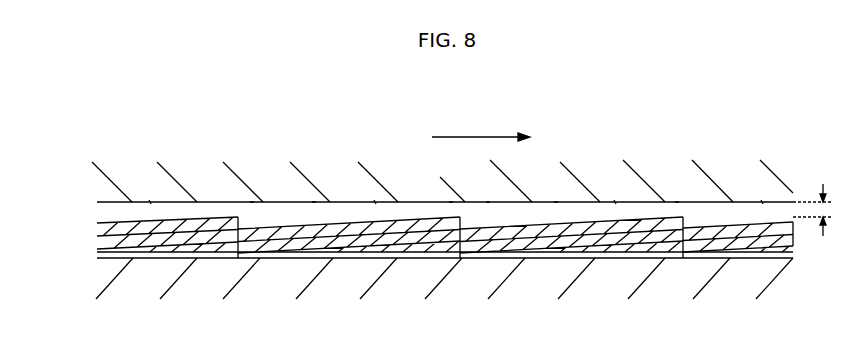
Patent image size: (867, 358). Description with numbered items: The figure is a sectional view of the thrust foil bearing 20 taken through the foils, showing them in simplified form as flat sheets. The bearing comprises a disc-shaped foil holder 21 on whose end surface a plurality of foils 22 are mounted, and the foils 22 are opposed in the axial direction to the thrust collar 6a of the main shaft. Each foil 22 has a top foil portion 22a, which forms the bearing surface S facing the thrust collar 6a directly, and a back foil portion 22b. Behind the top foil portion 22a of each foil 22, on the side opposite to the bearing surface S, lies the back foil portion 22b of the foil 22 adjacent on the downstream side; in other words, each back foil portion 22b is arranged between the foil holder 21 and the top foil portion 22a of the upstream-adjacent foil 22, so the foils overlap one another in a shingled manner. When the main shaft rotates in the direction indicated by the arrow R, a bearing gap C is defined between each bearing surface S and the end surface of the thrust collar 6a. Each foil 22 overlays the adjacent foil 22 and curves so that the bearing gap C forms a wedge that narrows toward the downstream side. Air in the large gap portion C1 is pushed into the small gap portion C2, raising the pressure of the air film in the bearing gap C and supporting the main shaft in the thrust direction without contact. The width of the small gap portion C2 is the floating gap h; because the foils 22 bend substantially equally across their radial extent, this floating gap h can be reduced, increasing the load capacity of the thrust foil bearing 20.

The thrust foil bearing 20 is at (100, 268).
The foil holder 21 is at (762, 275).
The foil 22 is at (205, 253).
The top foil portion 22a is at (366, 242).
The back foil portion 22b is at (137, 255).
The thrust collar 6a is at (730, 175).
The floating gap h is at (826, 211).
The rotation direction R is at (472, 137).
The bearing surface S is at (150, 208).
The bearing gap C is at (314, 208).
The large gap portion C1 is at (252, 210).
The small gap portion C2 is at (451, 208).